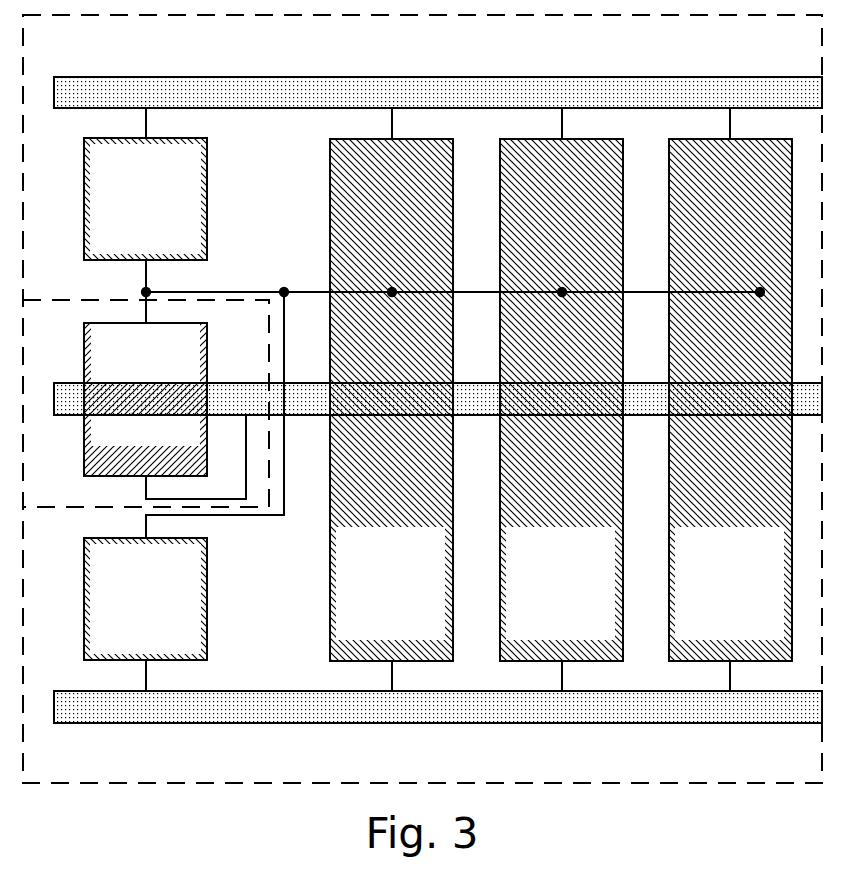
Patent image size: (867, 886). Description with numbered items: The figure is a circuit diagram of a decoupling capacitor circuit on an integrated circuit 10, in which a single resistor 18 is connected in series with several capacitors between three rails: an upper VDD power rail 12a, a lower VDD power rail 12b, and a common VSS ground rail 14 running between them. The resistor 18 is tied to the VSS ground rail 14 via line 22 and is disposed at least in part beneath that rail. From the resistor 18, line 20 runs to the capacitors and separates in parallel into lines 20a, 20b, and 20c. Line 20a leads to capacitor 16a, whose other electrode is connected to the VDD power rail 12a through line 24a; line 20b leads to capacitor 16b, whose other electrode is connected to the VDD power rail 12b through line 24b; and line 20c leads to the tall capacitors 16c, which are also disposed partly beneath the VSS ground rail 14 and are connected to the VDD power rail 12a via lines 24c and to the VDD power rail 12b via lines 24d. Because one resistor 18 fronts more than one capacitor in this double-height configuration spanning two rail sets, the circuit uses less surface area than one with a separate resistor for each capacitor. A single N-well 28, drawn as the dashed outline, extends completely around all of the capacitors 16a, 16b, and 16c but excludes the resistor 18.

The integrated circuit 10 is at (819, 764).
The VDD power rail 12a is at (438, 92).
The VDD power rail 12b is at (438, 707).
The VSS ground rail 14 is at (438, 399).
The capacitor 16a is at (145, 199).
The capacitor 16b is at (145, 599).
The capacitors 16c is at (561, 400).
The resistor 18 is at (145, 399).
The line 20 is at (146, 316).
The line 20a is at (146, 281).
The line 20b is at (146, 533).
The line 20c is at (303, 291).
The line 22 is at (146, 497).
The line 24a is at (146, 130).
The line 24b is at (146, 683).
The lines 24c is at (392, 128).
The lines 24d is at (392, 683).
The N-well 28 is at (422, 399).